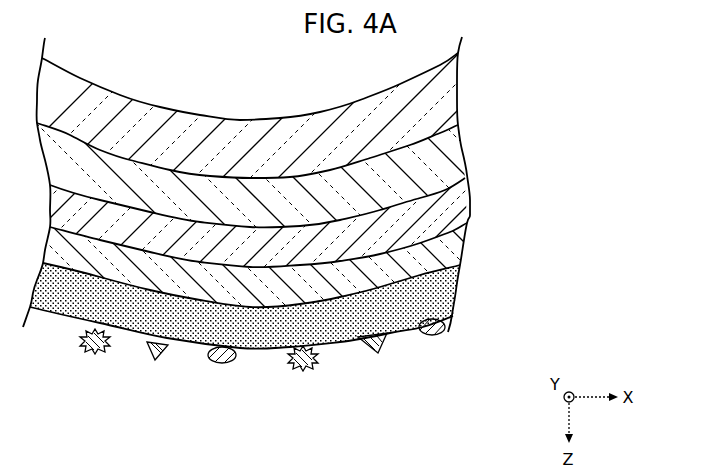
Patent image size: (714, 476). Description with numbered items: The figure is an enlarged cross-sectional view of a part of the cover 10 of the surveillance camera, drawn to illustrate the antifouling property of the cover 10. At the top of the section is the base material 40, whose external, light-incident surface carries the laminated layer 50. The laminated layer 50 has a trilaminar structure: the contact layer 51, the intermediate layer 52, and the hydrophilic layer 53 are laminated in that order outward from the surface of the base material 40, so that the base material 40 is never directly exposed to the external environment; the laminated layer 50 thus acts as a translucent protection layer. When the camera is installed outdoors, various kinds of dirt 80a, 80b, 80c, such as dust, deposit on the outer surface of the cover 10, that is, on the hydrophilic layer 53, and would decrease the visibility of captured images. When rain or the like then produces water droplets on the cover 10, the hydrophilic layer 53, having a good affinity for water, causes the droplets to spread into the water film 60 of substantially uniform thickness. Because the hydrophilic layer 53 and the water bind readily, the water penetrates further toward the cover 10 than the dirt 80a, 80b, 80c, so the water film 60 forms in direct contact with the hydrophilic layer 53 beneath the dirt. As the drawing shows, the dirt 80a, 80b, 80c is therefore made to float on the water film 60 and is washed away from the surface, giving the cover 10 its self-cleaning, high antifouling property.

The cover 10 is at (323, 193).
The base material 40 is at (421, 98).
The laminated layer 50 is at (298, 215).
The contact layer 51 is at (448, 158).
The intermediate layer 52 is at (447, 205).
The hydrophilic layer 53 is at (285, 265).
The water film 60 is at (288, 306).
The dirt 80a is at (90, 350).
The dirt 80b is at (155, 362).
The dirt 80c is at (223, 363).